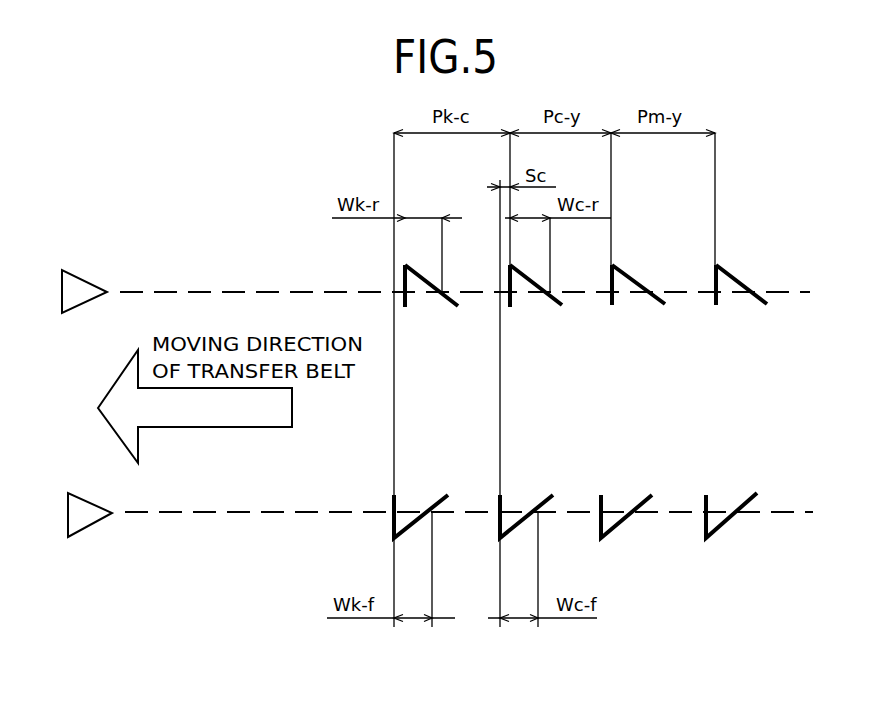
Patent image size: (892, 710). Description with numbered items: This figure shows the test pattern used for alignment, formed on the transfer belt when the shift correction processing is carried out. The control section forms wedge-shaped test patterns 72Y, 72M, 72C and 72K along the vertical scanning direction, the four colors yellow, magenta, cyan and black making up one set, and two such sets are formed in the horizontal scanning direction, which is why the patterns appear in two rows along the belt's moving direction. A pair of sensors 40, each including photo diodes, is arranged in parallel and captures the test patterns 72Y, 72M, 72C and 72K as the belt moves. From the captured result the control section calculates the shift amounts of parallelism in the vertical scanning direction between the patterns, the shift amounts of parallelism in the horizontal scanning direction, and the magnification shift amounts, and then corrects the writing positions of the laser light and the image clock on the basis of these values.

The sensor 40 is at (83, 282).
The test pattern (black) 72K is at (407, 302).
The test pattern (cyan) 72C is at (512, 302).
The test pattern (magenta) 72M is at (614, 302).
The test pattern (yellow) 72Y is at (718, 302).